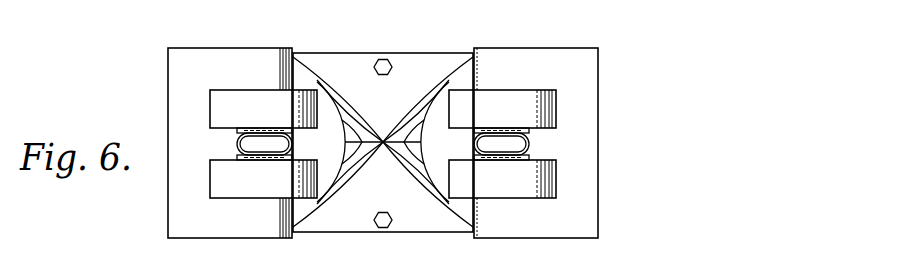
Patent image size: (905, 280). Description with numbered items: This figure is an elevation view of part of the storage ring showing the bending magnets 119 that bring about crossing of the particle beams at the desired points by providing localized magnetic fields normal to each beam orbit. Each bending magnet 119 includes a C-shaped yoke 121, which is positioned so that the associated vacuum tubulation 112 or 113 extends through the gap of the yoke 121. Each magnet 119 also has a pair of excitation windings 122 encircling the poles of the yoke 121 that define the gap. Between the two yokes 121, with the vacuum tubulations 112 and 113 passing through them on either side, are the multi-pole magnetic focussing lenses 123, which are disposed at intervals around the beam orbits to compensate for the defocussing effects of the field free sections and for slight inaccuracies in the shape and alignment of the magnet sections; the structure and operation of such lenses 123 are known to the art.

The bending magnet 119 is at (405, 122).
The C-shaped yoke 121 is at (234, 81).
The excitation winding 122 is at (277, 117).
The multi-pole magnetic focussing lens 123 is at (315, 79).
The vacuum tubulation 112 is at (292, 143).
The vacuum tubulation 113 is at (474, 143).